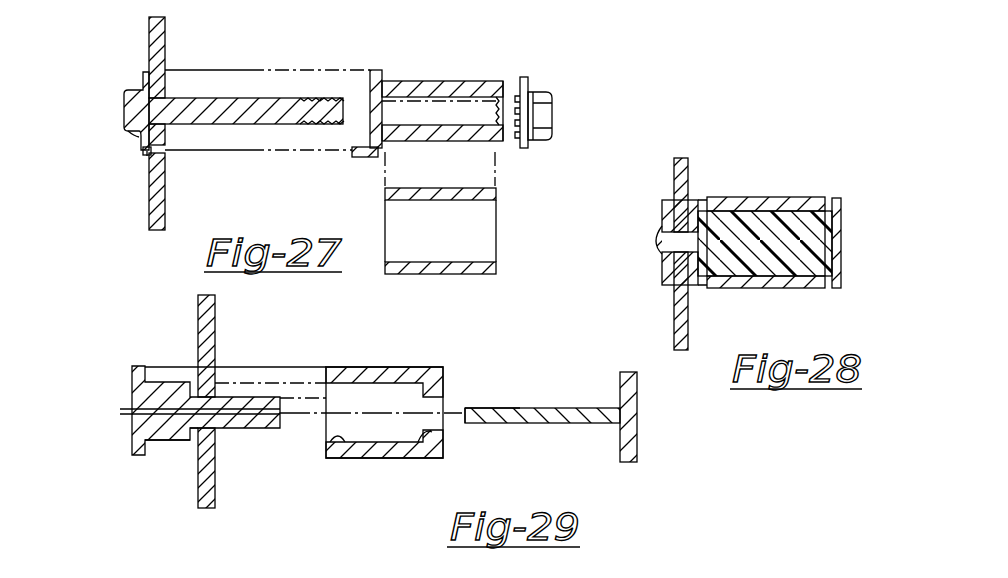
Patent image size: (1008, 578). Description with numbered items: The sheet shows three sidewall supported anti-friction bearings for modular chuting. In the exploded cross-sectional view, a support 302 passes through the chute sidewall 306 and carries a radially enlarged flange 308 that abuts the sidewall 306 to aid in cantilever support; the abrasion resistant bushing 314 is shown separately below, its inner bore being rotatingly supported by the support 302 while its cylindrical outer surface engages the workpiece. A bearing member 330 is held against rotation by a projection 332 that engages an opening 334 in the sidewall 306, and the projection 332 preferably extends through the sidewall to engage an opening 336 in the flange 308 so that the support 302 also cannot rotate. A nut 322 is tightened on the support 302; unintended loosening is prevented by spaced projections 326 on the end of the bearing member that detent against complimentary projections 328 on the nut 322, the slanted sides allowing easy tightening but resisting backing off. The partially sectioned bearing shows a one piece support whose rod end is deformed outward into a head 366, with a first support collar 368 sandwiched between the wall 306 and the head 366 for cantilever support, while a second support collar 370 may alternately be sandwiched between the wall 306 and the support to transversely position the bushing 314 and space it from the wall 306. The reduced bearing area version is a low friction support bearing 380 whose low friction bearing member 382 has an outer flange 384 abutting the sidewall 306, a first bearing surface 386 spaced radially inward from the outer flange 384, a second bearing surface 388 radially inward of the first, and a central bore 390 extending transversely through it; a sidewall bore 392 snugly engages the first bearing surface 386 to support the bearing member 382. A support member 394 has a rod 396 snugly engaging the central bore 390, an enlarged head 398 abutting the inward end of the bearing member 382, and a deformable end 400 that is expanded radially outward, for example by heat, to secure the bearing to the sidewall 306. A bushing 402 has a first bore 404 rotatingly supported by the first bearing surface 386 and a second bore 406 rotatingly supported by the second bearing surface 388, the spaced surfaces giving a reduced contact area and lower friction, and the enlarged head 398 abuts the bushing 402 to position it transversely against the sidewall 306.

In FIG. 27, the support 302 is at (246, 97).
In FIG. 27, the sidewall 306 is at (150, 72).
In FIG. 28, the sidewall 306 is at (676, 165).
In FIG. 29, the sidewall 306 is at (198, 318).
In FIG. 27, the radially enlarged flange 308 is at (147, 153).
In FIG. 27, the abrasion resistant bushing 314 is at (426, 274).
In FIG. 28, the abrasion resistant bushing 314 is at (812, 190).
In FIG. 27, the nut 322 is at (541, 92).
In FIG. 27, the spaced projections 326 is at (522, 85).
In FIG. 27, the complimentary projections 328 is at (522, 145).
In FIG. 27, the bearing member 330 is at (446, 60).
In FIG. 27, the projection 332 is at (356, 157).
In FIG. 27, the opening in the sidewall 334 is at (163, 152).
In FIG. 27, the opening in the flange 336 is at (138, 142).
In FIG. 28, the head 366 is at (657, 242).
In FIG. 28, the first support collar 368 is at (665, 212).
In FIG. 28, the second support collar 370 is at (700, 200).
In FIG. 29, the low friction support bearing 380 is at (175, 362).
In FIG. 29, the low friction bearing member 382 is at (205, 384).
In FIG. 29, the outer flange 384 is at (133, 370).
In FIG. 29, the first bearing surface 386 is at (130, 400).
In FIG. 29, the second bearing surface 388 is at (255, 384).
In FIG. 29, the central bore 390 is at (140, 426).
In FIG. 29, the sidewall bore 392 is at (195, 440).
In FIG. 29, the support member 394 is at (600, 408).
In FIG. 29, the rod 396 is at (520, 408).
In FIG. 29, the enlarged head 398 is at (646, 350).
In FIG. 29, the deformable end 400 is at (466, 424).
In FIG. 29, the bushing 402 is at (440, 348).
In FIG. 29, the first bore 404 is at (335, 442).
In FIG. 29, the second bore 406 is at (424, 440).